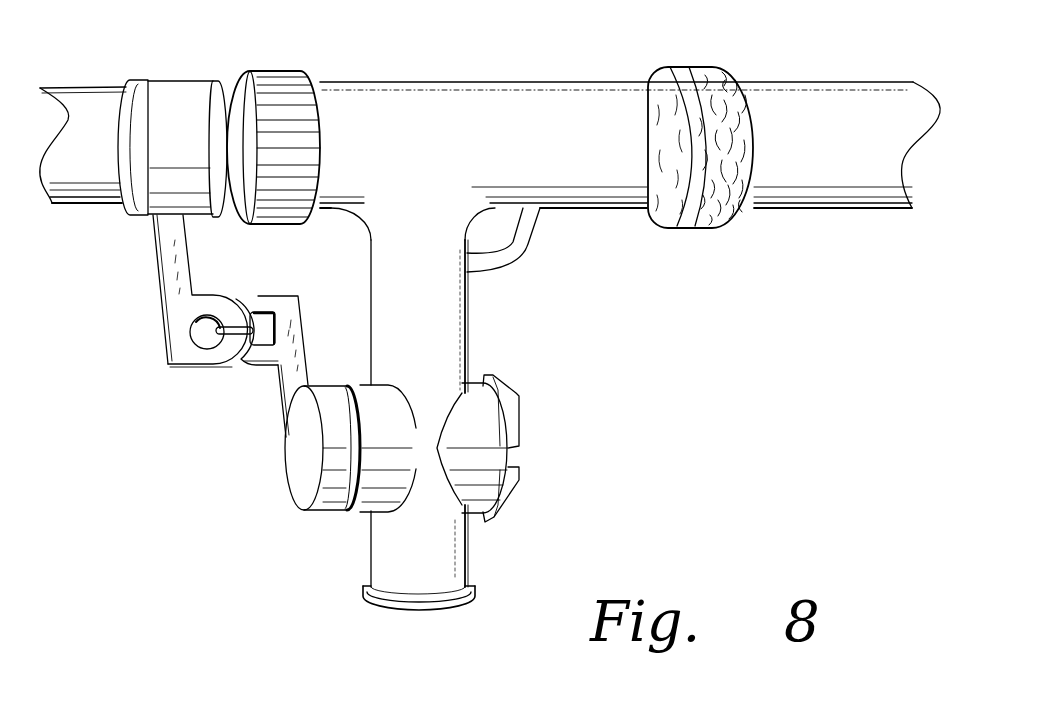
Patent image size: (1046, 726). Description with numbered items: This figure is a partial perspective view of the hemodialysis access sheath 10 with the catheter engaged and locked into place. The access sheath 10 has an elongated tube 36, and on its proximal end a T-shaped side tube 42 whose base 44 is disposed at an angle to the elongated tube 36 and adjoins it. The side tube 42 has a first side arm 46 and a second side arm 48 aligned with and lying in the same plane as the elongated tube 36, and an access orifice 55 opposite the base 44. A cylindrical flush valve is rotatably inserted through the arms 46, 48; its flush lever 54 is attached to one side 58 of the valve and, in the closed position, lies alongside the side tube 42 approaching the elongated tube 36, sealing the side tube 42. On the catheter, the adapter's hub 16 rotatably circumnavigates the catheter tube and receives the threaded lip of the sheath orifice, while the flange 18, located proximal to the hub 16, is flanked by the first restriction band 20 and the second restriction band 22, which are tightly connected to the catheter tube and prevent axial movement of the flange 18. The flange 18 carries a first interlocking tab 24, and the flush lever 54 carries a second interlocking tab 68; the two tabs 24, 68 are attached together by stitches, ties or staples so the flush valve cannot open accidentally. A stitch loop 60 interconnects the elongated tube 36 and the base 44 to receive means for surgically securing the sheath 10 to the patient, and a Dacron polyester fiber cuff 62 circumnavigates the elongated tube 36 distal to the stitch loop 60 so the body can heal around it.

The hemodialysis access sheath 10 is at (490, 336).
The hub 16 is at (277, 71).
The flange 18 is at (158, 262).
The first restriction band 20 is at (227, 113).
The second restriction band 22 is at (122, 158).
The first interlocking tab 24 is at (204, 363).
The elongated tube 36 is at (648, 160).
The T-shaped side tube 42 is at (463, 448).
The base 44 is at (430, 244).
The first side arm 46 is at (399, 437).
The second side arm 48 is at (482, 437).
The flush lever 54 is at (281, 397).
The access orifice 55 is at (426, 613).
The side of the flush valve 58 is at (322, 467).
The stitch loop 60 is at (528, 255).
The Dacron polyester fiber cuff 62 is at (694, 67).
The second interlocking tab 68 is at (260, 312).